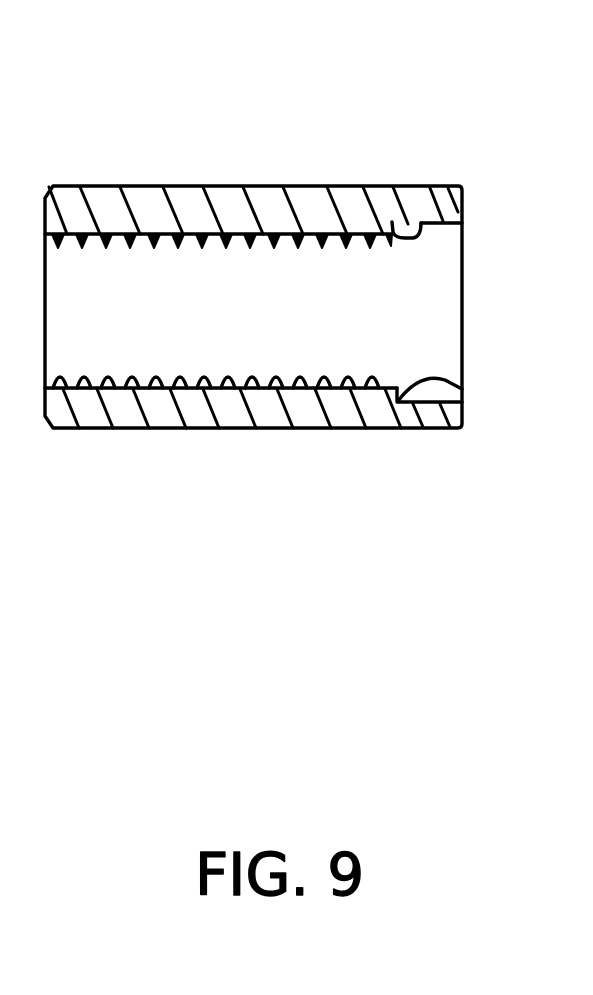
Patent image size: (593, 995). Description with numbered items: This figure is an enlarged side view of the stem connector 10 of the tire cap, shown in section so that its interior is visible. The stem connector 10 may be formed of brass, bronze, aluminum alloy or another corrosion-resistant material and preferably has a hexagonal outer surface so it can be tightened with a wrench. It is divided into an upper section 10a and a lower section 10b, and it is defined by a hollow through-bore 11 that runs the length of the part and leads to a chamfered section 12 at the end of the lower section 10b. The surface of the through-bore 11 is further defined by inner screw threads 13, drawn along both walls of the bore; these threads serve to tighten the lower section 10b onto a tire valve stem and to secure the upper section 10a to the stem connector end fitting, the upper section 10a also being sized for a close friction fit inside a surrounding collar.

The stem connector 10 is at (49, 175).
The upper section 10a is at (383, 438).
The lower section 10b is at (40, 437).
The through-bore 11 is at (200, 228).
The chamfered section 12 is at (422, 222).
The inner screw threads 13 is at (333, 388).